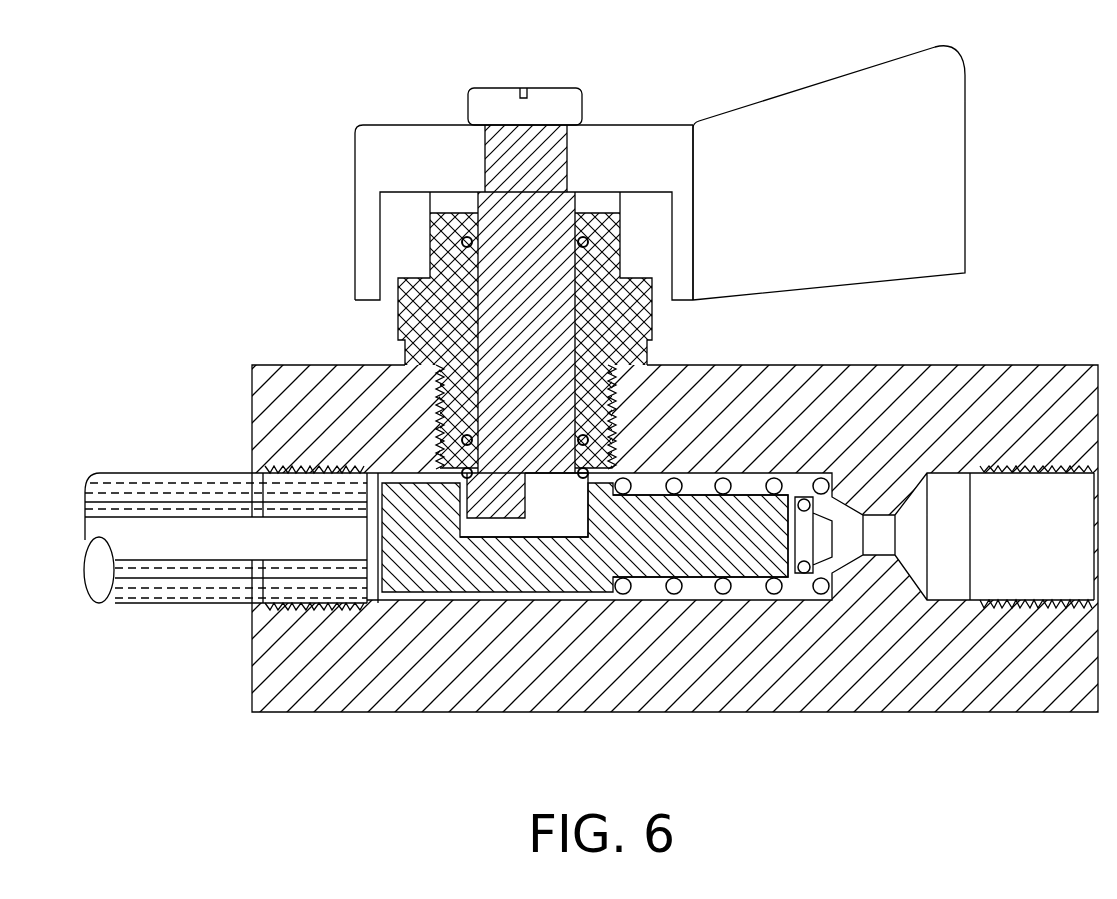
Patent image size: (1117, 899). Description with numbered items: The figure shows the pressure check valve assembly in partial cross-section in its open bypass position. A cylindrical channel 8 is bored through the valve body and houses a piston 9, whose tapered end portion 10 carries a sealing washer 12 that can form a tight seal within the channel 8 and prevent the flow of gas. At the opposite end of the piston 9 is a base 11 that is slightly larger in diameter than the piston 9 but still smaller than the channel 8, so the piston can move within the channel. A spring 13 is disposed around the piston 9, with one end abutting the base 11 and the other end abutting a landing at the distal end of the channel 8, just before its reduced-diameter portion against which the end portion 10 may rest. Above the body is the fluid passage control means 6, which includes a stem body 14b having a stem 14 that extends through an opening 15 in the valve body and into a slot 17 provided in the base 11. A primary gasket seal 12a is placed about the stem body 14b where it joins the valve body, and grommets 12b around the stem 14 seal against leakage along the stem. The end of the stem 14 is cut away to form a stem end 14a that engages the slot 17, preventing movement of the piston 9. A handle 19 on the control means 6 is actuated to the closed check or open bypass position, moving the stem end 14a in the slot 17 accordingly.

The fluid passage control means 6 is at (388, 122).
The handle 19 is at (970, 120).
The stem 14 is at (500, 227).
The stem end 14a is at (499, 507).
The stem body 14b is at (427, 258).
The primary gasket seal 12a is at (425, 368).
The grommets 12b is at (593, 240).
The opening 15 is at (463, 442).
The channel 8 is at (753, 482).
The spring 13 is at (678, 597).
The piston 9 is at (735, 553).
The end portion 10 is at (833, 512).
The base 11 is at (530, 573).
The sealing washer 12 is at (808, 583).
The slot 17 is at (552, 527).